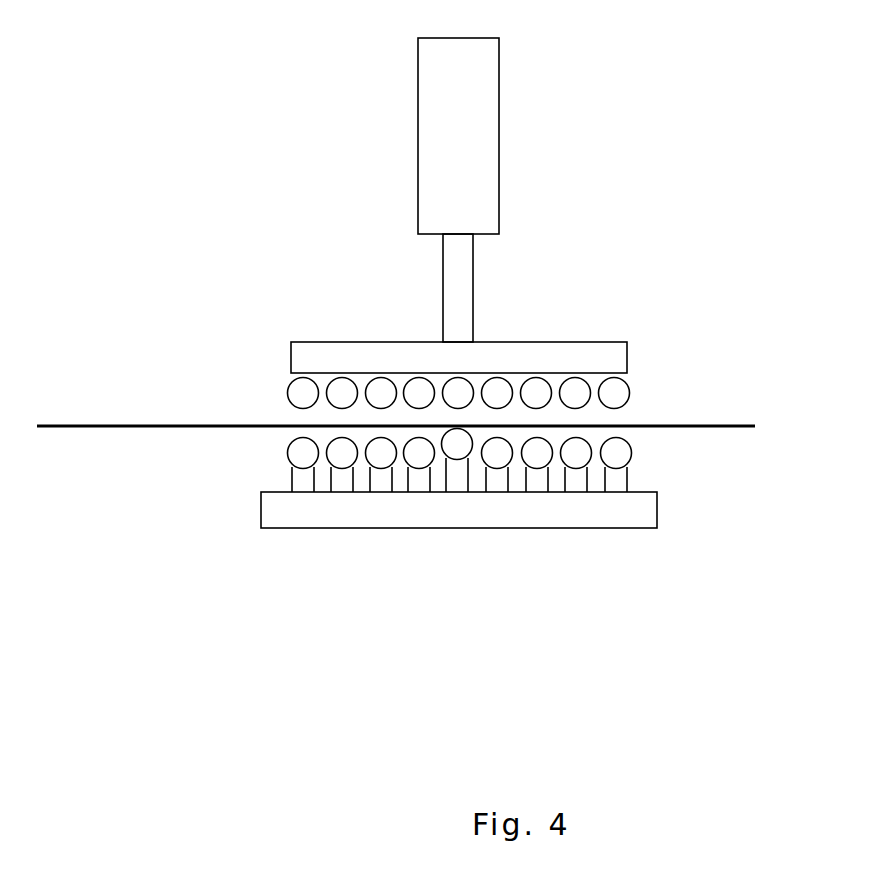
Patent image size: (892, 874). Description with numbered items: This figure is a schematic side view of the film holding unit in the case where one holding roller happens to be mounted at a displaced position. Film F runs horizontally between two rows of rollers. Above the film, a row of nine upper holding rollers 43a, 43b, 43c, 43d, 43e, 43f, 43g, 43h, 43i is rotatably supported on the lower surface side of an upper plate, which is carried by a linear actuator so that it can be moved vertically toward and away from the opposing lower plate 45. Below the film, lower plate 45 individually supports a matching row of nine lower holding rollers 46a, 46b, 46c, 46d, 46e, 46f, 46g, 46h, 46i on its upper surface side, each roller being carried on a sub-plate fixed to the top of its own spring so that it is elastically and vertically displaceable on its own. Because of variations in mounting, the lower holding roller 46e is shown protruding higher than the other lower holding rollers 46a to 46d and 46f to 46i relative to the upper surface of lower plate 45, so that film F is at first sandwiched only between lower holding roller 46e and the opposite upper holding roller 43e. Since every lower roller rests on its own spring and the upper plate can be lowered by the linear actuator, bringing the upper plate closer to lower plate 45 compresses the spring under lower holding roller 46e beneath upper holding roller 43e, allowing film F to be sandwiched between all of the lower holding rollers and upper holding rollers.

The film F is at (139, 426).
The upper holding roller 43a is at (303, 393).
The upper holding roller 43b is at (342, 393).
The upper holding roller 43c is at (381, 393).
The upper holding roller 43d is at (419, 393).
The upper holding roller 43e is at (458, 393).
The upper holding roller 43f is at (502, 393).
The upper holding roller 43g is at (538, 393).
The upper holding roller 43h is at (576, 393).
The upper holding roller 43i is at (616, 393).
The lower plate 45 is at (643, 506).
The lower holding roller 46a is at (303, 453).
The lower holding roller 46b is at (342, 453).
The lower holding roller 46c is at (381, 453).
The lower holding roller 46d is at (419, 453).
The lower holding roller 46e is at (456, 445).
The lower holding roller 46f is at (497, 453).
The lower holding roller 46g is at (537, 453).
The lower holding roller 46h is at (577, 453).
The lower holding roller 46i is at (617, 453).